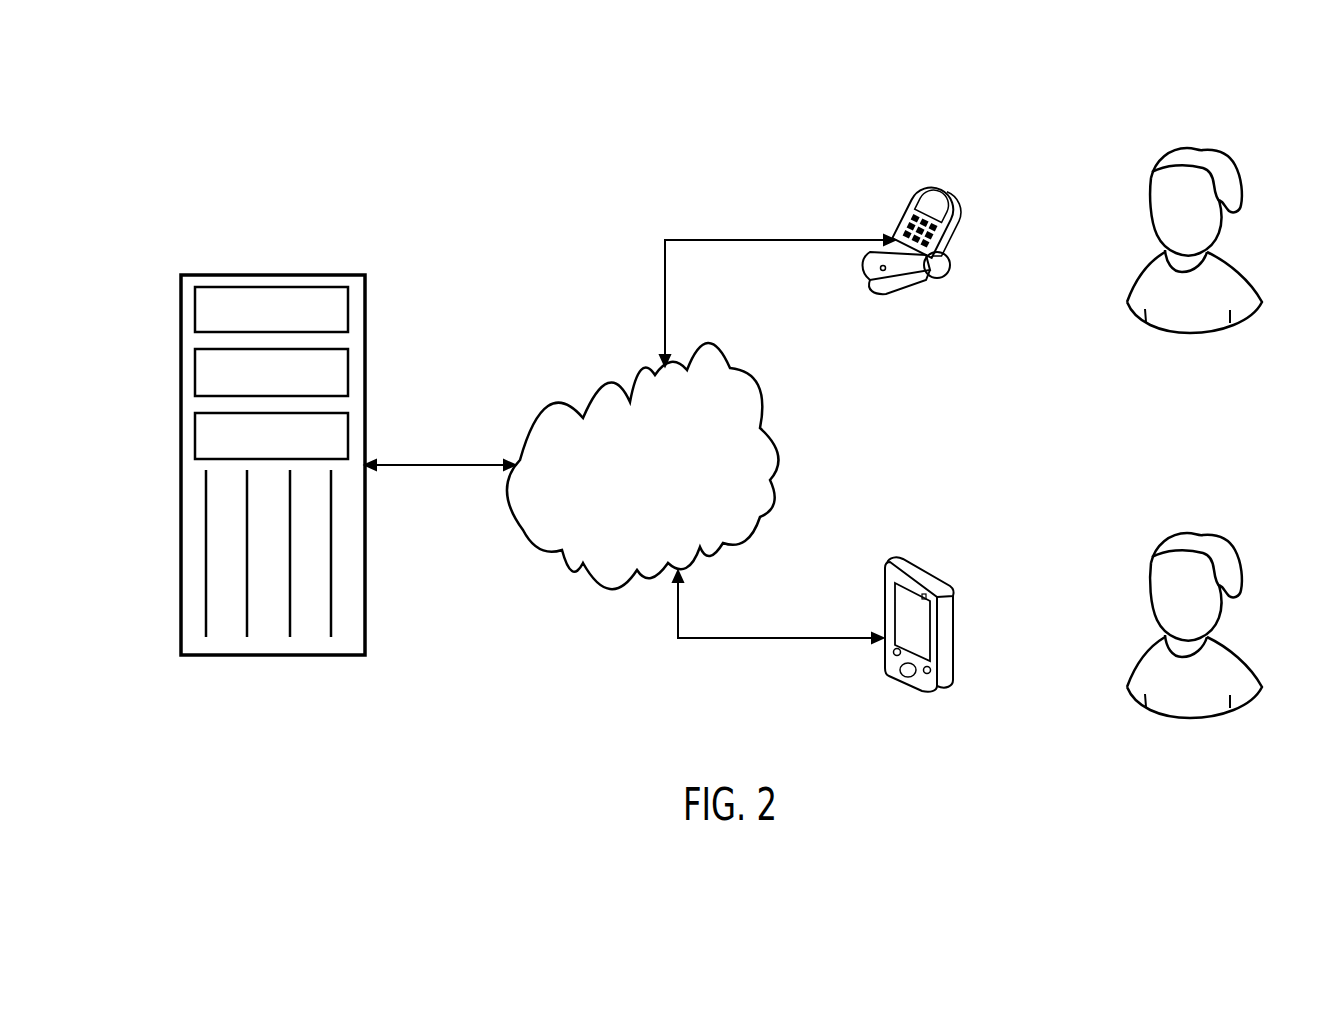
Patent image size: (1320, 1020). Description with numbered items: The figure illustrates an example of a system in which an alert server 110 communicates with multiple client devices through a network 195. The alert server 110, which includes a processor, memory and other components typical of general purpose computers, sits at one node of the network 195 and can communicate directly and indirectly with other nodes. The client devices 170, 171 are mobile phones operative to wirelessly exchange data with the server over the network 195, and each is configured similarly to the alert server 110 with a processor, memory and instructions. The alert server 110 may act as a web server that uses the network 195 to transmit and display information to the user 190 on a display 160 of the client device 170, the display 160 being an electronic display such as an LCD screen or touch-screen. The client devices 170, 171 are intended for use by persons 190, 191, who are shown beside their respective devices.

The alert server 110 is at (226, 272).
The network 195 is at (643, 466).
The display 160 is at (949, 211).
The client device 170 is at (940, 182).
The client device 171 is at (915, 562).
The user 190 is at (1172, 145).
The person 191 is at (1178, 600).